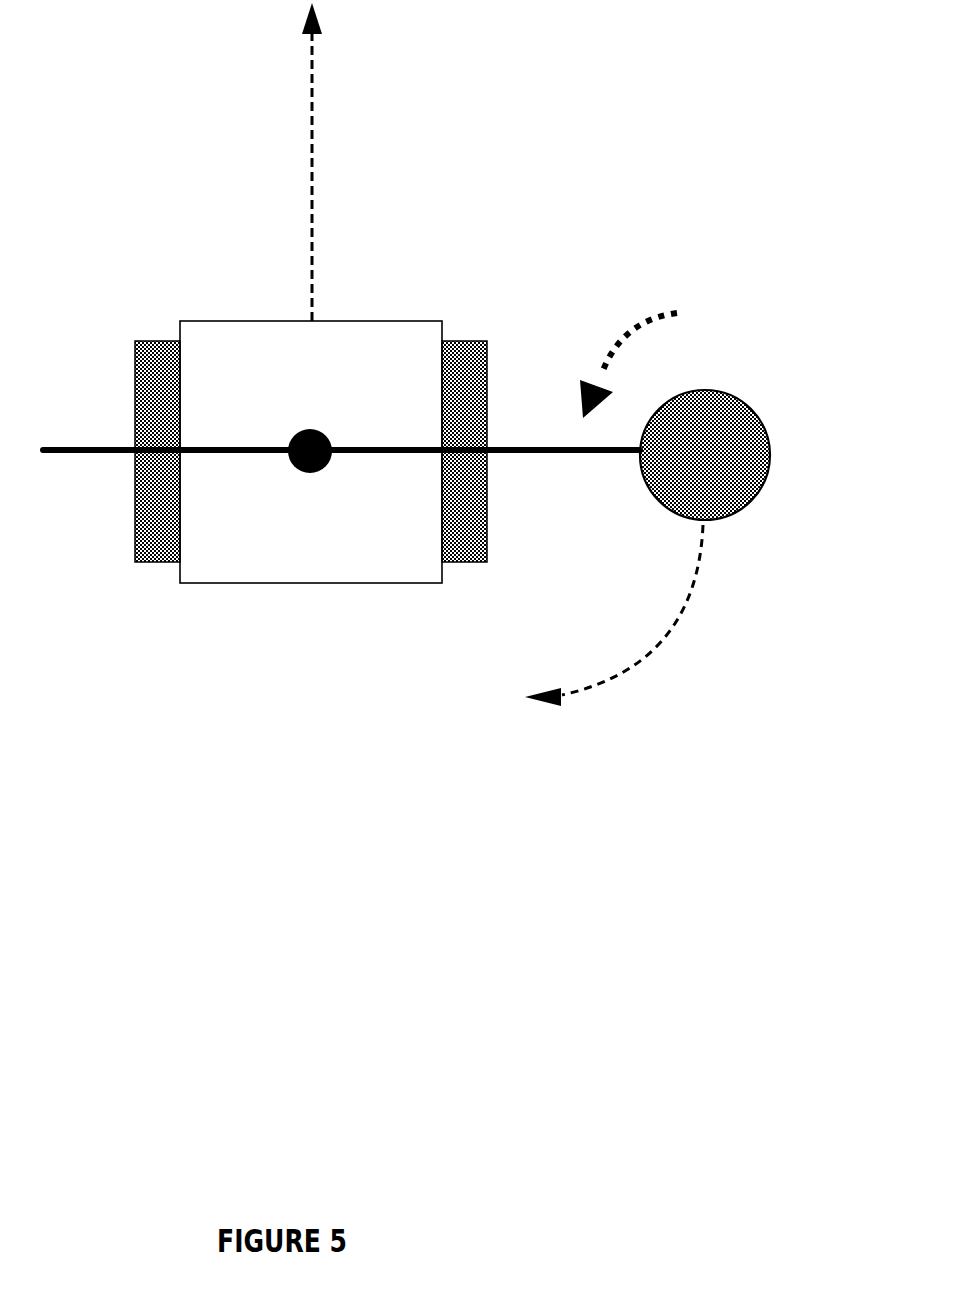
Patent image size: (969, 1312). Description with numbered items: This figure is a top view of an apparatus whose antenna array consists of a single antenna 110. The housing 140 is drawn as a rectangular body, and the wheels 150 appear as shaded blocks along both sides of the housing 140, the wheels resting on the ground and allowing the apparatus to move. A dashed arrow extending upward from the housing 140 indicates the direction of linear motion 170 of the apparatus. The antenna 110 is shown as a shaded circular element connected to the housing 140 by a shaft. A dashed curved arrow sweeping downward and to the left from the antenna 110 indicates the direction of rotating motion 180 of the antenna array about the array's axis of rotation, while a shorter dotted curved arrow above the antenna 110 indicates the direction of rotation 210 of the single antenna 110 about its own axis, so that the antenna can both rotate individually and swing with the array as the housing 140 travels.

The antenna 110 is at (729, 434).
The housing 140 is at (390, 348).
The wheels 150 is at (487, 378).
The direction of linear motion 170 is at (322, 66).
The direction of rotating motion 180 is at (640, 672).
The direction of rotation 210 is at (670, 355).